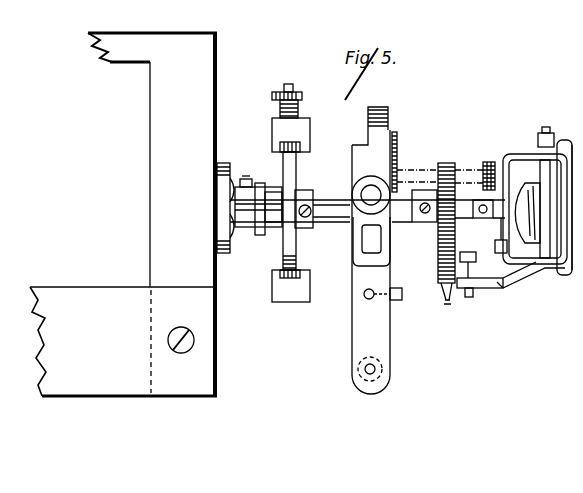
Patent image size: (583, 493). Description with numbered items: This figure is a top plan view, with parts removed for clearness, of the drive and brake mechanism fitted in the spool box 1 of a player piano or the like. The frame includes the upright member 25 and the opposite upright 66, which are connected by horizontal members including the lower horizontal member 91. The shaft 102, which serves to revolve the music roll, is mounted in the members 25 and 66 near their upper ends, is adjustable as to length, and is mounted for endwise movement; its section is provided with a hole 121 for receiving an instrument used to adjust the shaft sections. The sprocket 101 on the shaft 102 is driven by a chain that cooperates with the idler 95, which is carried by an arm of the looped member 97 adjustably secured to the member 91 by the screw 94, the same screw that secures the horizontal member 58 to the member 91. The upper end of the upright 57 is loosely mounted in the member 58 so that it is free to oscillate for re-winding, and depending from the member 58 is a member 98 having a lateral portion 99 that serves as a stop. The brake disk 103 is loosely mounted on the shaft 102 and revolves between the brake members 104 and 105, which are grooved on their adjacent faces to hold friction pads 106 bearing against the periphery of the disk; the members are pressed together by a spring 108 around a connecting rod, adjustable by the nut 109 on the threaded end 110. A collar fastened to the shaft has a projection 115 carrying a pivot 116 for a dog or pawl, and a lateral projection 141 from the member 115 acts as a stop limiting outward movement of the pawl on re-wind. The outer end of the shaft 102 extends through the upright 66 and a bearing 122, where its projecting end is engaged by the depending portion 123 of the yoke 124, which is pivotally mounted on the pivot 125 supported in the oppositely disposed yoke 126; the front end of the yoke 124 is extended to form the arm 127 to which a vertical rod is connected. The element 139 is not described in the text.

The spool box 1 is at (175, 180).
The upright member 25 is at (218, 239).
The lateral projection 141 is at (268, 214).
The projection 115 is at (262, 186).
The pivot 116 is at (282, 192).
The brake disk 103 is at (292, 178).
The brake member 105 is at (273, 130).
The friction pads 106 is at (279, 146).
The brake member 104 is at (272, 293).
The spring 108 is at (299, 104).
The nut 109 is at (283, 80).
The threaded end 110 is at (292, 84).
The shaft 102 is at (331, 212).
The horizontal member 91 is at (345, 230).
The horizontal member 58 is at (383, 336).
The upright 57 is at (376, 369).
The member 98 is at (366, 298).
The lateral portion 99 is at (396, 300).
The screw 94 is at (387, 183).
The threaded rod 139 is at (396, 143).
The looped member 97 is at (383, 247).
The sprocket 101 is at (447, 165).
The idler 95 is at (447, 287).
The hole 121 is at (489, 218).
The depending portion 123 is at (517, 172).
The yoke 126 is at (512, 154).
The yoke 124 is at (563, 150).
The pivot 125 is at (570, 270).
The bearing 122 is at (513, 228).
The arm 127 is at (498, 290).
The upright 66 is at (499, 279).